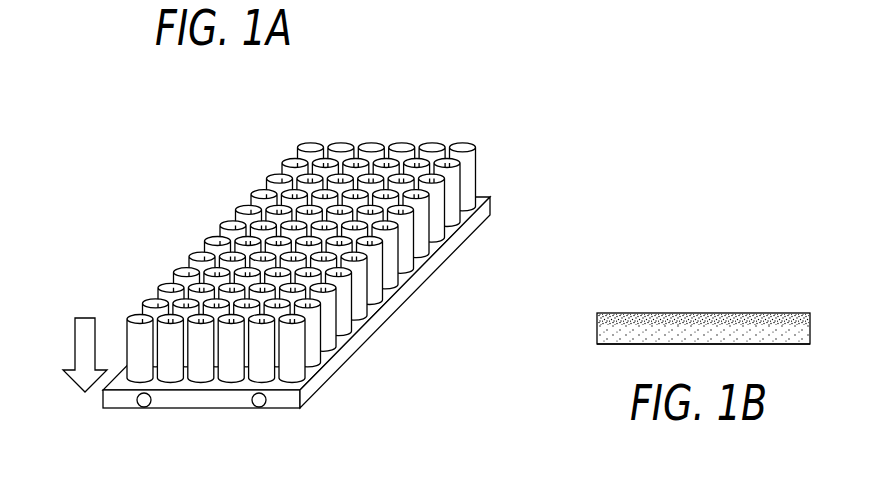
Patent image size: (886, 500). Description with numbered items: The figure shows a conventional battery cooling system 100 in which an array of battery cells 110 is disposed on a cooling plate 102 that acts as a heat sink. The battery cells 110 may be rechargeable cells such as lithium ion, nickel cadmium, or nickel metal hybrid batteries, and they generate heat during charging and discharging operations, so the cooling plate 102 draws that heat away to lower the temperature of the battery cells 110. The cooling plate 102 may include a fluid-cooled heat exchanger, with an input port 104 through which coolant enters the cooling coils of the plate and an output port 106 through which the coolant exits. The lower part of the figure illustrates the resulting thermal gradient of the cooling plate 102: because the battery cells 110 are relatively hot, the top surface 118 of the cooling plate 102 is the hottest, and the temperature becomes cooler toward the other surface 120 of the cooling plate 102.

In FIG. 1A, the battery cooling system 100 is at (126, 191).
In FIG. 1A, the cooling plate 102 is at (496, 200).
In FIG. 1B, the cooling plate 102 is at (765, 322).
In FIG. 1A, the input port 104 is at (138, 406).
In FIG. 1A, the output port 106 is at (222, 440).
In FIG. 1A, the battery cells 110 is at (262, 220).
In FIG. 1B, the top surface 118 is at (675, 312).
In FIG. 1B, the other surface 120 is at (620, 345).